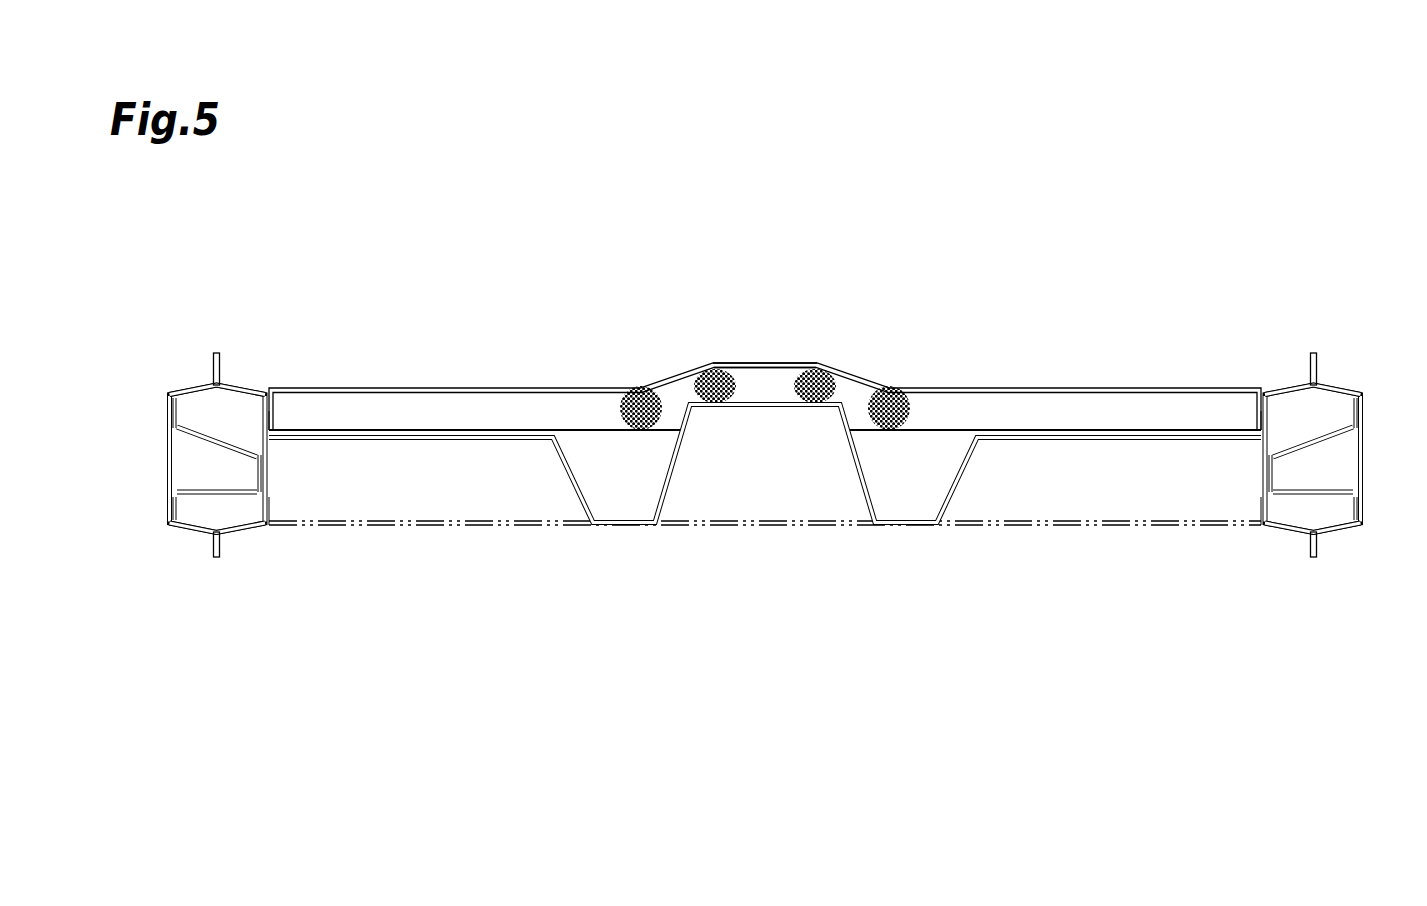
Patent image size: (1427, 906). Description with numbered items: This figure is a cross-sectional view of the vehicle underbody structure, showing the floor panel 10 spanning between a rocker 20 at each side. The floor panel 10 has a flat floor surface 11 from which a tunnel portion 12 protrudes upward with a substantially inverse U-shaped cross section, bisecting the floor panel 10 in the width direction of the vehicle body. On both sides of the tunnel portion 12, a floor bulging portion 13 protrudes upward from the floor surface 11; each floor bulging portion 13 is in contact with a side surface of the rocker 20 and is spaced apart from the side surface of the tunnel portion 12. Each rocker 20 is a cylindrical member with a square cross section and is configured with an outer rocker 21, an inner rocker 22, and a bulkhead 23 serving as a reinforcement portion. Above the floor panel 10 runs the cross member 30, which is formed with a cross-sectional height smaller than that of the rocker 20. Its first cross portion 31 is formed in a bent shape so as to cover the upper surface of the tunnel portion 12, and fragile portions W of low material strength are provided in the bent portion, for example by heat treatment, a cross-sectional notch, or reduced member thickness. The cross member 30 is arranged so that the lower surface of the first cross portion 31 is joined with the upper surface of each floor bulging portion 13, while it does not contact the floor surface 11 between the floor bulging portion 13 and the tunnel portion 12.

The floor panel 10 is at (765, 437).
The floor surface 11 is at (452, 521).
The tunnel portion 12 is at (758, 408).
The floor bulging portion 13 is at (403, 438).
The rocker 20 is at (769, 437).
The outer rocker 21 is at (188, 390).
The inner rocker 22 is at (238, 533).
The bulkhead 23 is at (208, 442).
The cross member 30 is at (765, 341).
The first cross portion 31 is at (760, 365).
The fragile portion W is at (695, 368).